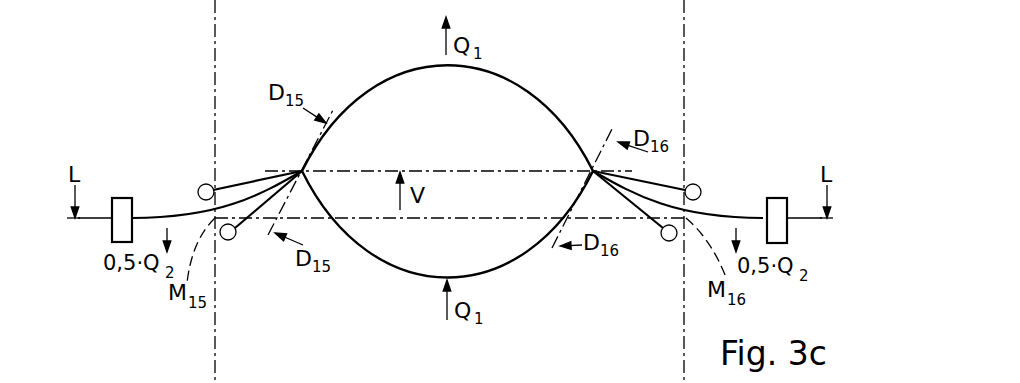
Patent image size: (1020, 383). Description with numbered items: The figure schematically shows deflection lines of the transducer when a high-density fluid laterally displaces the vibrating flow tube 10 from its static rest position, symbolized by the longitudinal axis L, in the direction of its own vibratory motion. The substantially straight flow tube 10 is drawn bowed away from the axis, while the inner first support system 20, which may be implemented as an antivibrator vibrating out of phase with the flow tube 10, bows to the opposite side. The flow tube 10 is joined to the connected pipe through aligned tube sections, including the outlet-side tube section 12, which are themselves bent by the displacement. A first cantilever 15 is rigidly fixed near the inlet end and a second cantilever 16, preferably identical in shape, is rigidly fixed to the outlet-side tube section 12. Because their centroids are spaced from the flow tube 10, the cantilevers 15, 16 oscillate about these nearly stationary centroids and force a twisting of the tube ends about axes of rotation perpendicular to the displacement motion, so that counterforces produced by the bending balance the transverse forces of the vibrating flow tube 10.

The flow tube 10 is at (363, 61).
The first support system 20 is at (535, 272).
The outlet-side tube section 12 is at (722, 199).
The first cantilever 15 is at (242, 249).
The second cantilever 16 is at (655, 250).